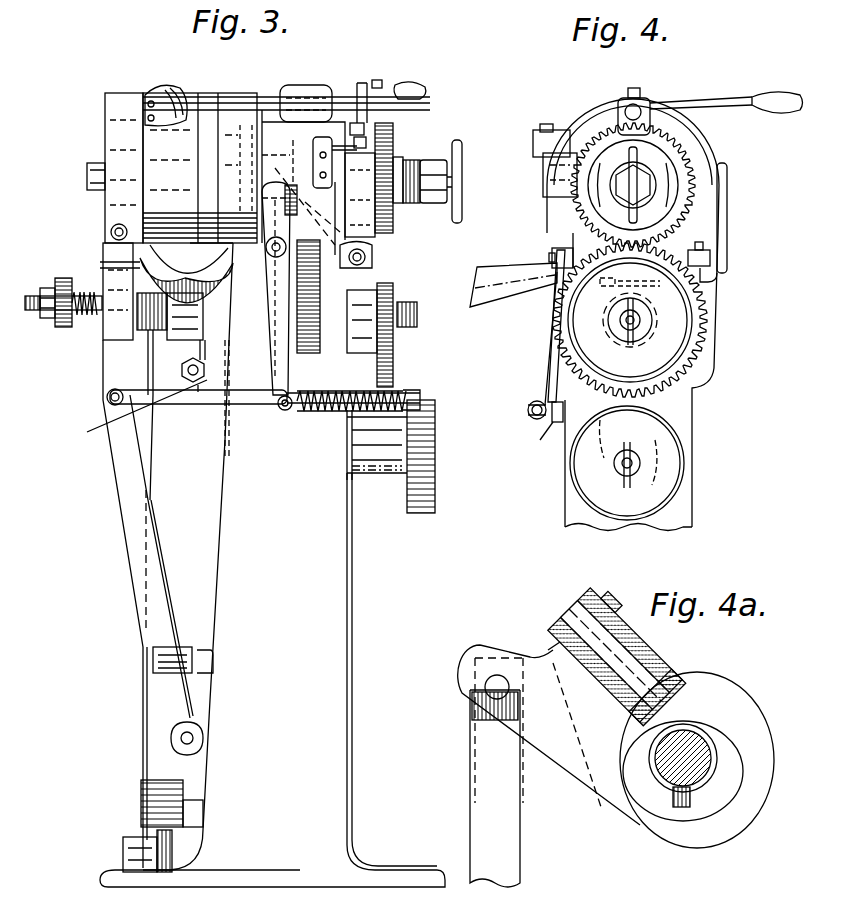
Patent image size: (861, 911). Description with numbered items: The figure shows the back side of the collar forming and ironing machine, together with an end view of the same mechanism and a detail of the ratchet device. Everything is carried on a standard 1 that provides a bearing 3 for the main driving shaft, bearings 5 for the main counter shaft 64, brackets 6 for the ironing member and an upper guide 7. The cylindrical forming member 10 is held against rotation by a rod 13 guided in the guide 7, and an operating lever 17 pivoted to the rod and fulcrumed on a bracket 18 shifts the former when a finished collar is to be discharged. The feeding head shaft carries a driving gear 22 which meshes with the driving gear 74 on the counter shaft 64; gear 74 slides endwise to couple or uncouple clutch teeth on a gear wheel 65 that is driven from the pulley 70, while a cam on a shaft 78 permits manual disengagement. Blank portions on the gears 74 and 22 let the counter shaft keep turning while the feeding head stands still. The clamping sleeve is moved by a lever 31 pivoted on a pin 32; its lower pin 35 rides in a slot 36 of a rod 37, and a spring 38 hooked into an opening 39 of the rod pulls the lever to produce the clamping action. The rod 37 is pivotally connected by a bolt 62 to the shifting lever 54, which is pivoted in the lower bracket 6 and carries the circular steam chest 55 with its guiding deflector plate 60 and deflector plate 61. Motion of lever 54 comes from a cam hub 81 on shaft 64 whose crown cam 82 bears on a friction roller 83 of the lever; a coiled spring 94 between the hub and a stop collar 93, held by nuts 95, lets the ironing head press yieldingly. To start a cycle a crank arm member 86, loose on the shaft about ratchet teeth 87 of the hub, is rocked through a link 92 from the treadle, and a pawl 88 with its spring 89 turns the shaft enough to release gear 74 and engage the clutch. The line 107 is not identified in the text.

In FIG. 3, the standard 1 is at (301, 530).
In FIG. 4, the standard 1 is at (692, 412).
In FIG. 3, the bearing 3 is at (378, 478).
In FIG. 3, the bearings 5 is at (362, 305).
In FIG. 3, the brackets 6 is at (178, 735).
In FIG. 3, the upper guide 7 is at (318, 97).
In FIG. 3, the cylindrical forming member 10 is at (209, 95).
In FIG. 4, the cylindrical forming member 10 is at (712, 178).
In FIG. 3, the rod 13 is at (278, 95).
In FIG. 4, the rod 13 is at (657, 117).
In FIG. 3, the operating lever 17 is at (362, 97).
In FIG. 4, the operating lever 17 is at (580, 105).
In FIG. 3, the bracket 18 is at (392, 140).
In FIG. 3, the driving gear 22 is at (394, 213).
In FIG. 4, the driving gear 22 is at (700, 152).
In FIG. 3, the lever 31 is at (282, 370).
In FIG. 4, the lever 31 is at (546, 375).
In FIG. 3, the pin 32 is at (267, 252).
In FIG. 3, the pin 35 is at (285, 410).
In FIG. 3, the slot 36 is at (272, 403).
In FIG. 3, the rod 37 is at (198, 402).
In FIG. 4, the rod 37 is at (545, 430).
In FIG. 3, the spring 38 is at (330, 412).
In FIG. 4, the spring 38 is at (530, 417).
In FIG. 3, the opening 39 is at (412, 393).
In FIG. 3, the shifting lever 54 is at (115, 482).
In FIG. 3, the circular steam chest 55 is at (112, 127).
In FIG. 3, the guiding deflector plate 60 is at (170, 95).
In FIG. 3, the deflector plate 61 is at (100, 262).
In FIG. 4, the deflector plate 61 is at (510, 305).
In FIG. 3, the bolt 62 is at (107, 397).
In FIG. 3, the main counter shaft 64 is at (417, 315).
In FIG. 4A, the main counter shaft 64 is at (667, 777).
In FIG. 3, the gear wheel 65 is at (292, 252).
In FIG. 3, the pulley 70 is at (432, 458).
In FIG. 4, the pulley 70 is at (685, 458).
In FIG. 3, the driving gear 74 is at (393, 350).
In FIG. 4, the driving gear 74 is at (683, 325).
In FIG. 3, the shaft 78 is at (368, 258).
In FIG. 4, the shaft 78 is at (712, 265).
In FIG. 4A, the cam hub 81 is at (703, 803).
In FIG. 3, the crown cam 82 is at (195, 345).
In FIG. 3, the friction roller 83 is at (208, 356).
In FIG. 3, the crank arm member 86 is at (185, 330).
In FIG. 4A, the crank arm member 86 is at (570, 777).
In FIG. 4A, the ratchet teeth 87 is at (688, 680).
In FIG. 4A, the pawl 88 is at (650, 665).
In FIG. 4A, the spring 89 is at (555, 650).
In FIG. 3, the link 92 is at (145, 707).
In FIG. 4A, the link 92 is at (487, 806).
In FIG. 3, the stop collar 93 is at (58, 285).
In FIG. 3, the coiled spring 94 is at (80, 318).
In FIG. 3, the nuts 95 is at (45, 318).
In FIG. 3, the link 107 is at (87, 432).